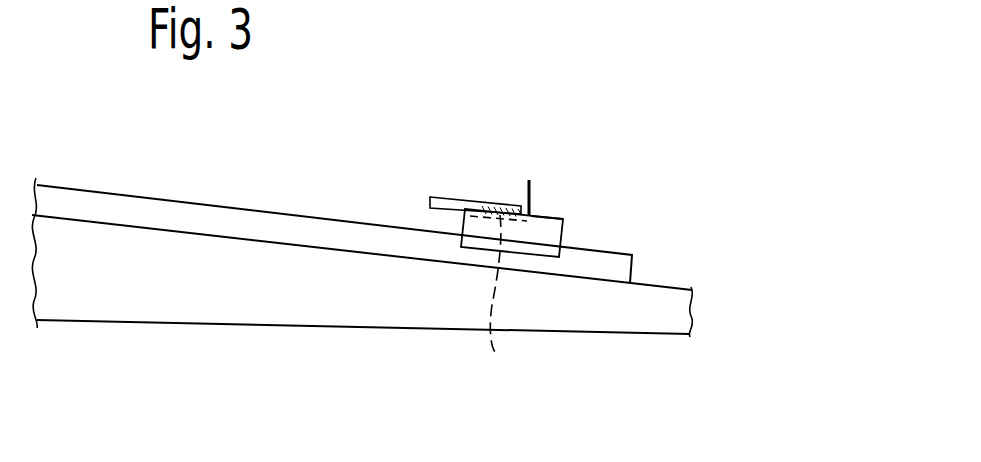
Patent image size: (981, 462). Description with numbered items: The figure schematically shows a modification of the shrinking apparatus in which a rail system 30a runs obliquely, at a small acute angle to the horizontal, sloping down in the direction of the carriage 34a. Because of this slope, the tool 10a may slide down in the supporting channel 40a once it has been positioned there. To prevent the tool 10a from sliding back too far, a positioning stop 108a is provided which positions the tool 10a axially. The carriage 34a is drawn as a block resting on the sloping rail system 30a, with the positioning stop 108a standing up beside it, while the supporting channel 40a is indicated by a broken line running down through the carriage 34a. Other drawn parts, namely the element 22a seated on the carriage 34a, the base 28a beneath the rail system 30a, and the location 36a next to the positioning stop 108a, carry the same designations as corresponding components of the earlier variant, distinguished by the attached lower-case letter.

The tool 10a is at (506, 232).
The carrier plate 22a is at (430, 202).
The base body 28a is at (140, 298).
The rail system 30a is at (203, 204).
The carriage 34a is at (560, 232).
The gap 36a is at (553, 198).
The supporting channel 40a is at (495, 352).
The positioning stop 108a is at (524, 208).